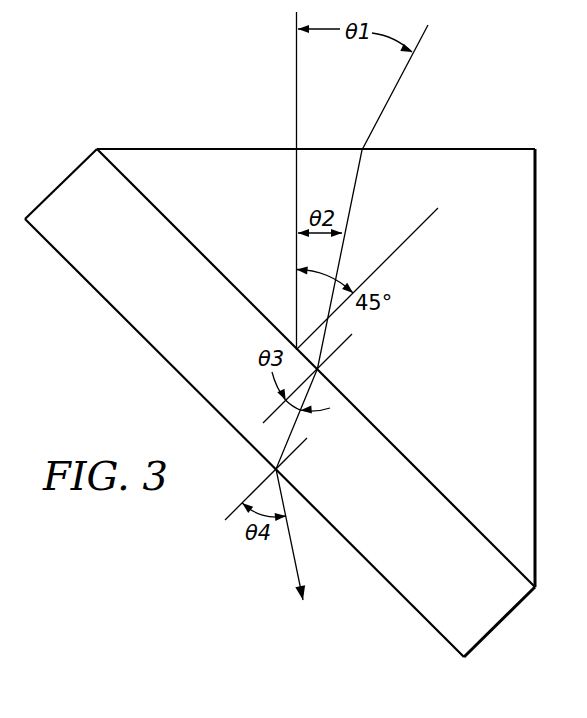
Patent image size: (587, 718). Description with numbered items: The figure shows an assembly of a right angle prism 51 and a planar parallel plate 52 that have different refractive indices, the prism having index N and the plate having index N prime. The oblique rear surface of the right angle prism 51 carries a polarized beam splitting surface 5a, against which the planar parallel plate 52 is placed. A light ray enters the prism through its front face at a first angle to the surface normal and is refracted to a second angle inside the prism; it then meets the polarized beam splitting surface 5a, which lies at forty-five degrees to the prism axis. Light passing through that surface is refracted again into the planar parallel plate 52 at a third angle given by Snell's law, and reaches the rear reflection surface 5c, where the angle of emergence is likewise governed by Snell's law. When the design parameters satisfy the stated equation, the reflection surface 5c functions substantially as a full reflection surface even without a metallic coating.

The polarized beam splitting surface 5a is at (170, 223).
The reflection surface 5c is at (133, 330).
The right angle prism 51 is at (533, 213).
The planar parallel plate 52 is at (491, 622).